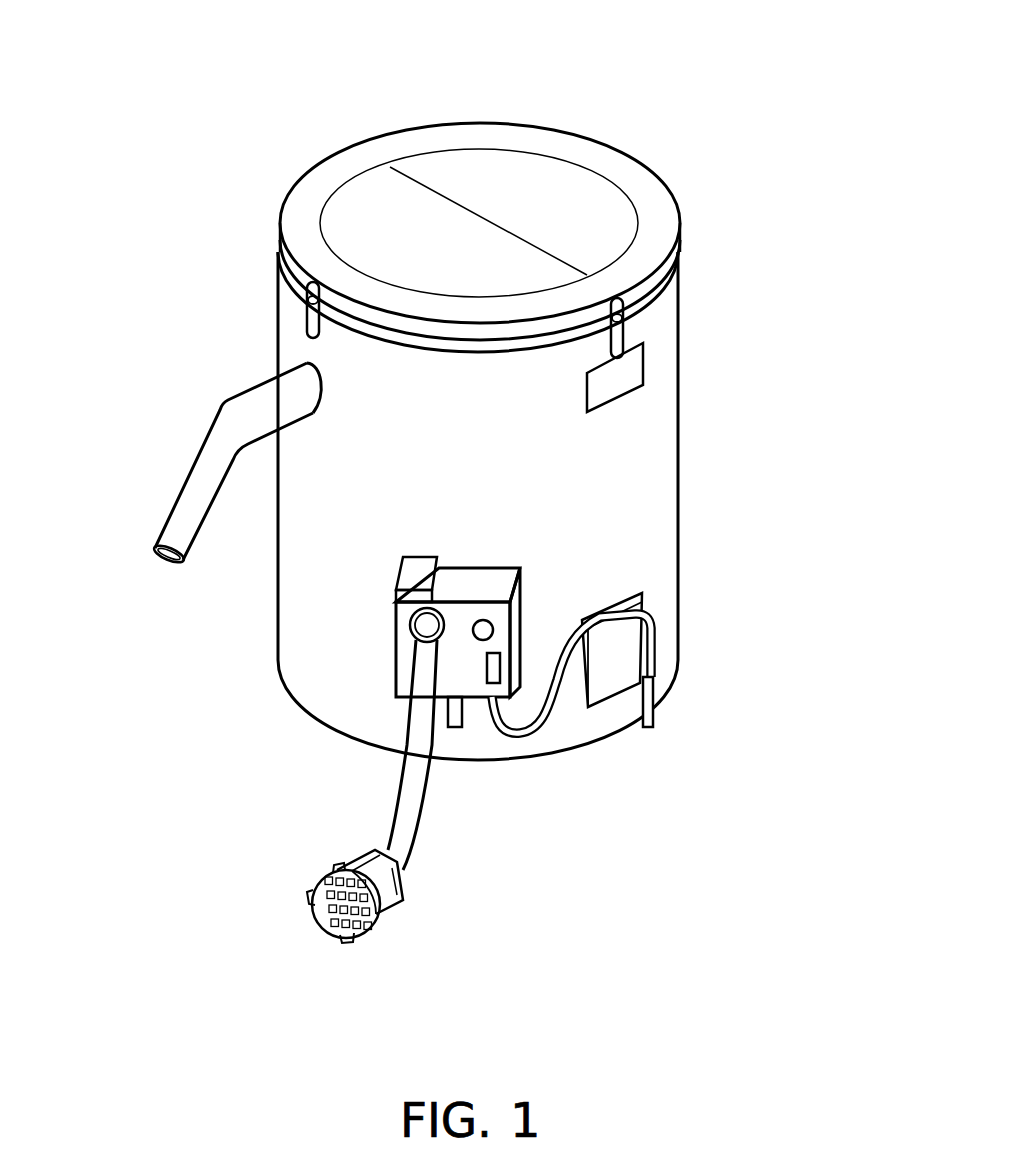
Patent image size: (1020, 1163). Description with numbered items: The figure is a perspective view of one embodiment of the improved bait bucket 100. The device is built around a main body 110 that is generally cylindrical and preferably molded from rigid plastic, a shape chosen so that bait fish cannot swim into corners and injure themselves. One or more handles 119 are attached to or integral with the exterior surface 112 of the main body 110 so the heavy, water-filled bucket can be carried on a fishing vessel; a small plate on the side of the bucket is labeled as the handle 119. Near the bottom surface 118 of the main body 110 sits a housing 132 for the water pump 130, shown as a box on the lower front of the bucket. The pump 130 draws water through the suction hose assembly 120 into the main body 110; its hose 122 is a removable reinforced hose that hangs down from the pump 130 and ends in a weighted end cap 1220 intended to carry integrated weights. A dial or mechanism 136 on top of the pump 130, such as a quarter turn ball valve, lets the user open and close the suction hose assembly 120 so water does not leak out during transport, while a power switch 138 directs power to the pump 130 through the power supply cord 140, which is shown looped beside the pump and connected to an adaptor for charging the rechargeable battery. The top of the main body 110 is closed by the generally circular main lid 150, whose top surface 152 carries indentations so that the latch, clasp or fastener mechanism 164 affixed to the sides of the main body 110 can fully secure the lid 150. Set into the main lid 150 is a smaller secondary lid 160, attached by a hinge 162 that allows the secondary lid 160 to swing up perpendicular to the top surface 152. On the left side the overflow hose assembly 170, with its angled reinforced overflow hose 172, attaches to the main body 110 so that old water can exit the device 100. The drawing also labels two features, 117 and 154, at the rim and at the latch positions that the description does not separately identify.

The improved bait bucket 100 is at (810, 60).
The main body 110 is at (540, 517).
The exterior surface 112 is at (509, 464).
The rim 117 is at (395, 339).
The bottom surface 118 is at (298, 707).
The handle 119 is at (625, 380).
The suction hose assembly 120 is at (460, 814).
The suction hose 122 is at (408, 791).
The weighted end cap 1220 is at (405, 902).
The water pump 130 is at (495, 636).
The housing 132 is at (483, 630).
The dial or mechanism 136 is at (415, 573).
The power switch 138 is at (493, 672).
The power supply cord 140 is at (548, 722).
The main lid 150 is at (491, 301).
The top surface 152 is at (574, 197).
The latch clip 154 is at (313, 315).
The secondary lid 160 is at (357, 212).
The hinge 162 is at (428, 183).
The latch, clasp or fastener mechanism 164 is at (670, 202).
The overflow hose assembly 170 is at (184, 449).
The overflow hose 172 is at (178, 535).